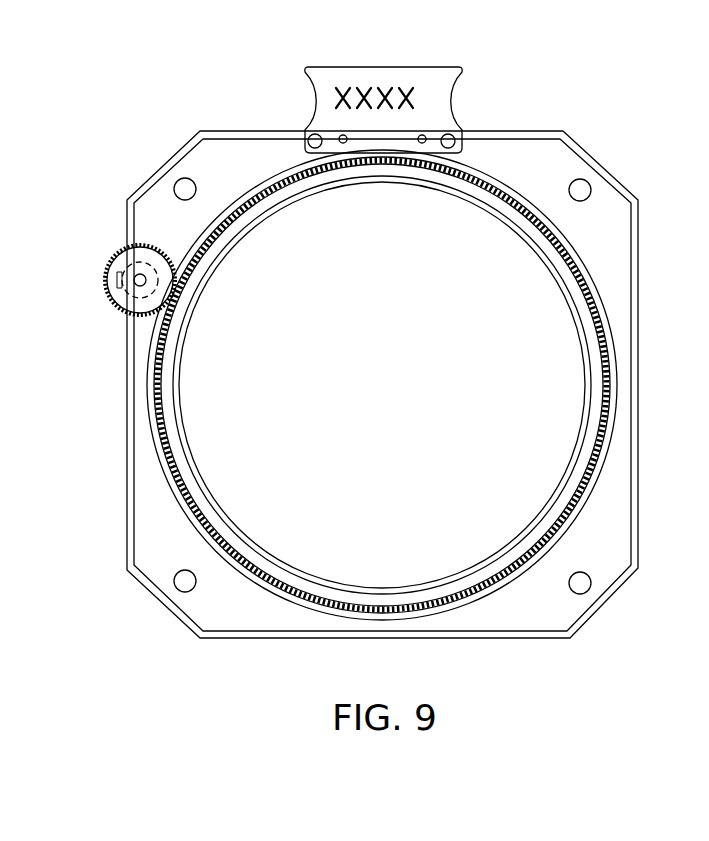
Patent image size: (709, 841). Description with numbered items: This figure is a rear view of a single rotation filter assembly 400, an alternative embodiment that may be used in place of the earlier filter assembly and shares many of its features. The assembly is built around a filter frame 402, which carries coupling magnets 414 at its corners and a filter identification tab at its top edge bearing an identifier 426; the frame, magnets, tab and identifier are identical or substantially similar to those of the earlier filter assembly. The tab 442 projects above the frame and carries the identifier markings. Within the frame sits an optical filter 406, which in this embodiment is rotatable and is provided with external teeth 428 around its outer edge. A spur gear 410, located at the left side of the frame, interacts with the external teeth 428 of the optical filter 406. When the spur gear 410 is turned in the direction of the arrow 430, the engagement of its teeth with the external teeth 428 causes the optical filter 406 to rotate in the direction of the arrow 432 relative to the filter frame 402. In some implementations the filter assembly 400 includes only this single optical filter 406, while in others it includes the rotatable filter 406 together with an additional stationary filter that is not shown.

The single rotation filter assembly 400 is at (124, 122).
The filter frame 402 is at (507, 131).
The optical filter 406 is at (585, 297).
The spur gear 410 is at (105, 284).
The coupling magnets 414 is at (177, 181).
The identifier 426 is at (428, 90).
The external teeth 428 is at (182, 224).
The arrow 430 is at (157, 241).
The arrow 432 is at (197, 222).
The tab 442 is at (385, 67).